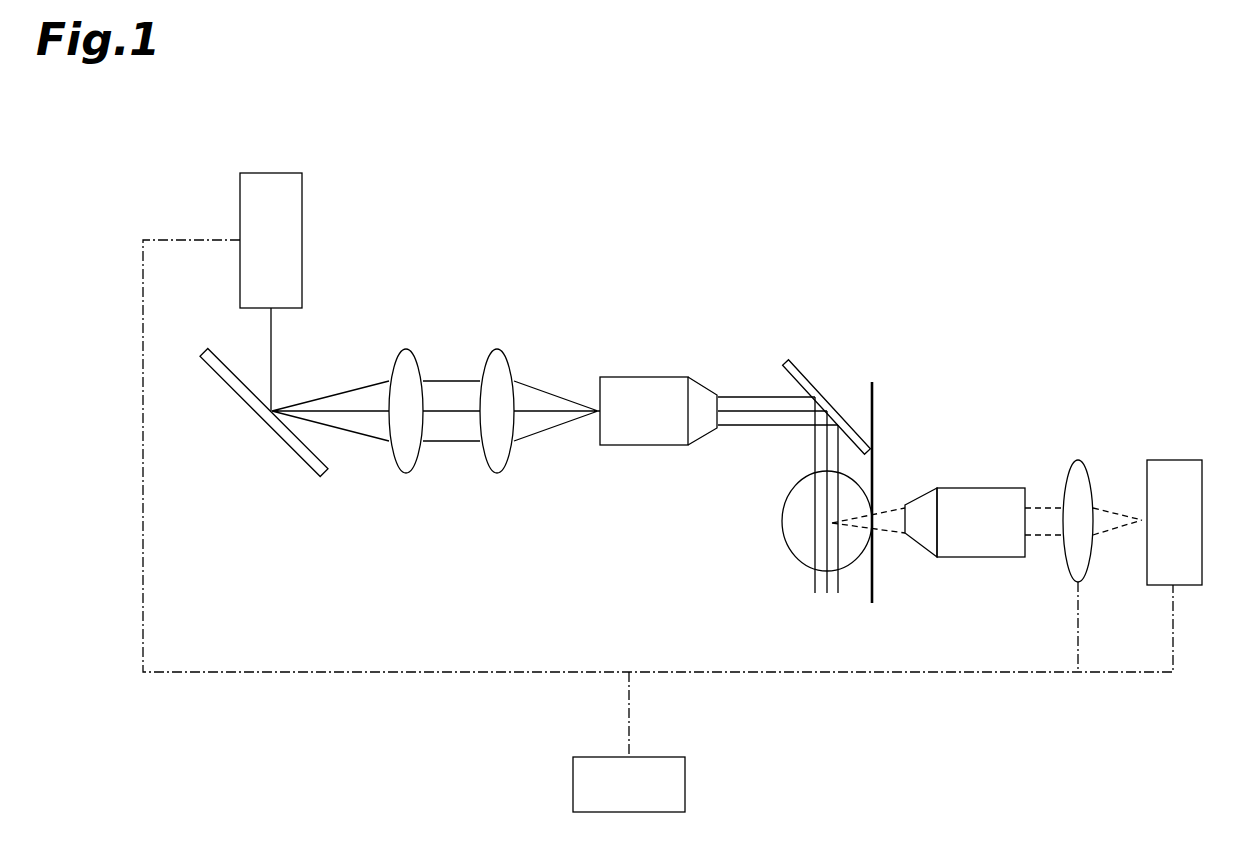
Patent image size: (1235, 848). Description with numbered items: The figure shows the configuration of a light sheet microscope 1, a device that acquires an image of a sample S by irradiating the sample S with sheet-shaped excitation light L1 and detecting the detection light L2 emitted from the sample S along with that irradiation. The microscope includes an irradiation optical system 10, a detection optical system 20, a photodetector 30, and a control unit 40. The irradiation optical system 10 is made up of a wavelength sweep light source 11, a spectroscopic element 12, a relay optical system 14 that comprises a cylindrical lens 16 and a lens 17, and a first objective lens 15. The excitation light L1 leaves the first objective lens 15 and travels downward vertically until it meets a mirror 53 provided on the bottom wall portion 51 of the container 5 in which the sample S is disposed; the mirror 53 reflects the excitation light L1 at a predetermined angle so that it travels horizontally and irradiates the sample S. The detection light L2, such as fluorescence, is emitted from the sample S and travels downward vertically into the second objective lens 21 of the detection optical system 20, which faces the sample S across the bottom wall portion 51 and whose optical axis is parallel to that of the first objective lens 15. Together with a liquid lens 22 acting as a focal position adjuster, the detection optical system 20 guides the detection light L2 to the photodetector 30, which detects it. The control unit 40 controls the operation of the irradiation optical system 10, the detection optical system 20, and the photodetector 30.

The light sheet microscope 1 is at (838, 237).
The irradiation optical system 10 is at (358, 306).
The wavelength sweep light source 11 is at (270, 172).
The spectroscopic element 12 is at (276, 433).
The relay optical system 14 is at (523, 286).
The cylindrical lens 16 is at (406, 348).
The lens 17 is at (498, 348).
The first objective lens 15 is at (645, 376).
The excitation light L1 is at (555, 427).
The container 5 is at (876, 405).
The mirror 53 is at (805, 374).
The bottom wall portion 51 is at (876, 578).
The sample S is at (783, 535).
The detection light L2 is at (885, 510).
The detection optical system 20 is at (1030, 406).
The second objective lens 21 is at (975, 487).
The liquid lens 22 is at (1079, 460).
The photodetector 30 is at (1175, 460).
The control unit 40 is at (686, 785).